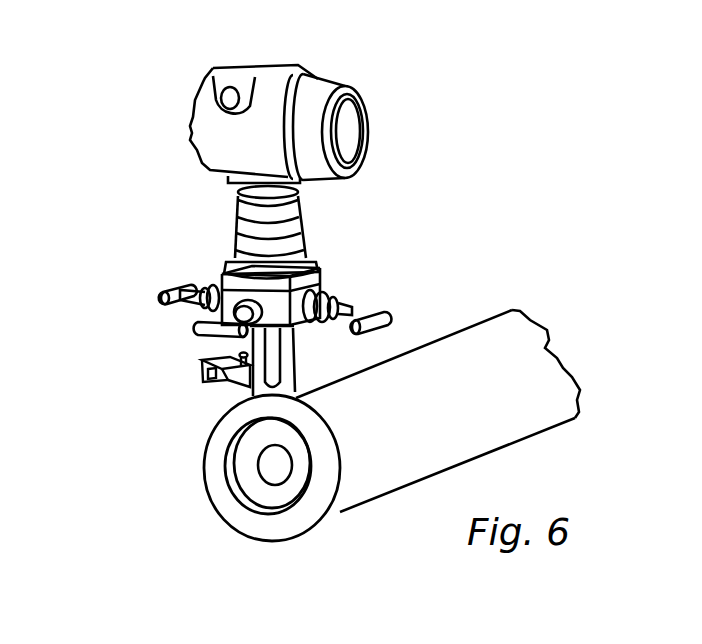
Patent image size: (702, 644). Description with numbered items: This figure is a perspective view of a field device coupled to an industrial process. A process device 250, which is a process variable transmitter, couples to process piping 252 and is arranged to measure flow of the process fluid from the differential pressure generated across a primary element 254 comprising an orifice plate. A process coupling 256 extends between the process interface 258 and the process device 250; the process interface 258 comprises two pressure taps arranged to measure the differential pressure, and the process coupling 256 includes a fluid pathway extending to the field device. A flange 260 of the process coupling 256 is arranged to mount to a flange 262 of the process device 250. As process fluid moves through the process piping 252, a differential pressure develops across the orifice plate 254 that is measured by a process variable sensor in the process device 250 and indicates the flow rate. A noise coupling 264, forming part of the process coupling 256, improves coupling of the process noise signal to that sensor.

The process device 250 is at (190, 114).
The process piping 252 is at (485, 320).
The primary element 254 is at (245, 460).
The process coupling 256 is at (305, 350).
The process interface 258 is at (290, 462).
The flange 260 is at (335, 302).
The flange 262 is at (320, 284).
The noise coupling 264 is at (202, 367).